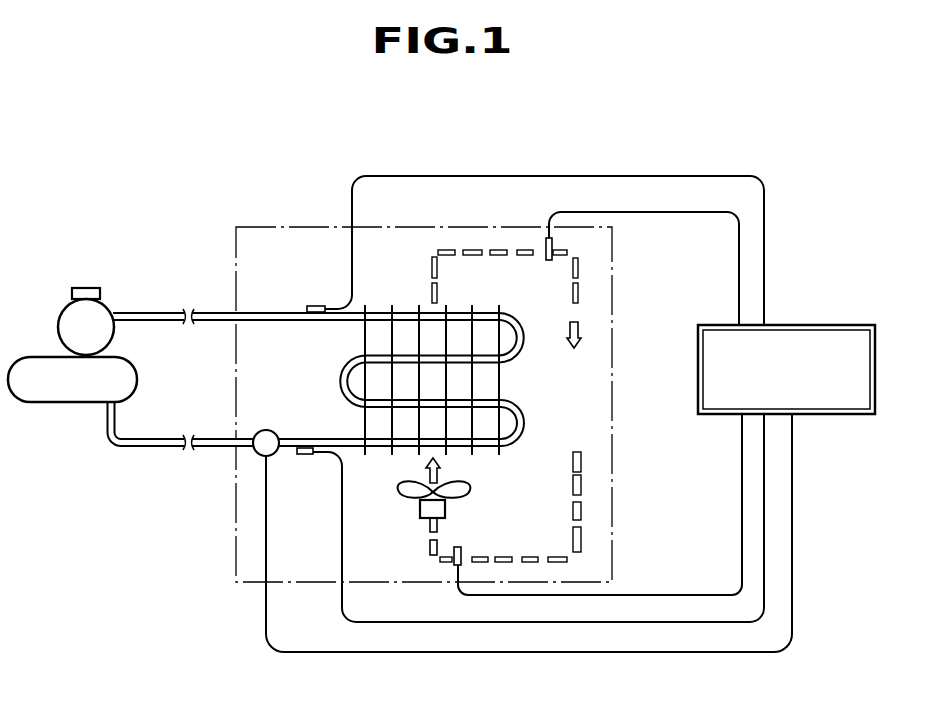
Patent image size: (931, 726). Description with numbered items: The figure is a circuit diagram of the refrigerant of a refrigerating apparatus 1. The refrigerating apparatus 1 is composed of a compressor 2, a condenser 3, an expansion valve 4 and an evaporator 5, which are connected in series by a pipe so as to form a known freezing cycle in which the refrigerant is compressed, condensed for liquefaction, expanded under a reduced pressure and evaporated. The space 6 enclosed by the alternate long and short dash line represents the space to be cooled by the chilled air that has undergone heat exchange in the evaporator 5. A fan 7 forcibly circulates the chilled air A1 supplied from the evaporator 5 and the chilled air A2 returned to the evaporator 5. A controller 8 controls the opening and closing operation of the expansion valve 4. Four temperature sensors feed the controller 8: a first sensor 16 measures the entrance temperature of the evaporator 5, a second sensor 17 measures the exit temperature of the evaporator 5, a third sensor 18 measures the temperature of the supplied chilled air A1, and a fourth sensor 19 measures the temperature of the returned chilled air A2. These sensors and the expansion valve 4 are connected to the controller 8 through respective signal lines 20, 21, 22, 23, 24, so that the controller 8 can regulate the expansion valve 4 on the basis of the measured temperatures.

The refrigerating apparatus 1 is at (260, 195).
The compressor 2 is at (110, 308).
The condenser 3 is at (28, 403).
The expansion valve 4 is at (266, 430).
The evaporator 5 is at (362, 353).
The space 6 is at (337, 223).
The fan 7 is at (446, 512).
The controller 8 is at (787, 325).
The first sensor 16 is at (307, 458).
The second sensor 17 is at (318, 306).
The third sensor 18 is at (544, 242).
The fourth sensor 19 is at (453, 558).
The signal line 20 is at (608, 623).
The signal line 21 is at (588, 176).
The signal line 22 is at (670, 214).
The signal line 23 is at (645, 597).
The signal line 24 is at (265, 632).
The chilled air A1 is at (582, 292).
The chilled air A2 is at (582, 538).